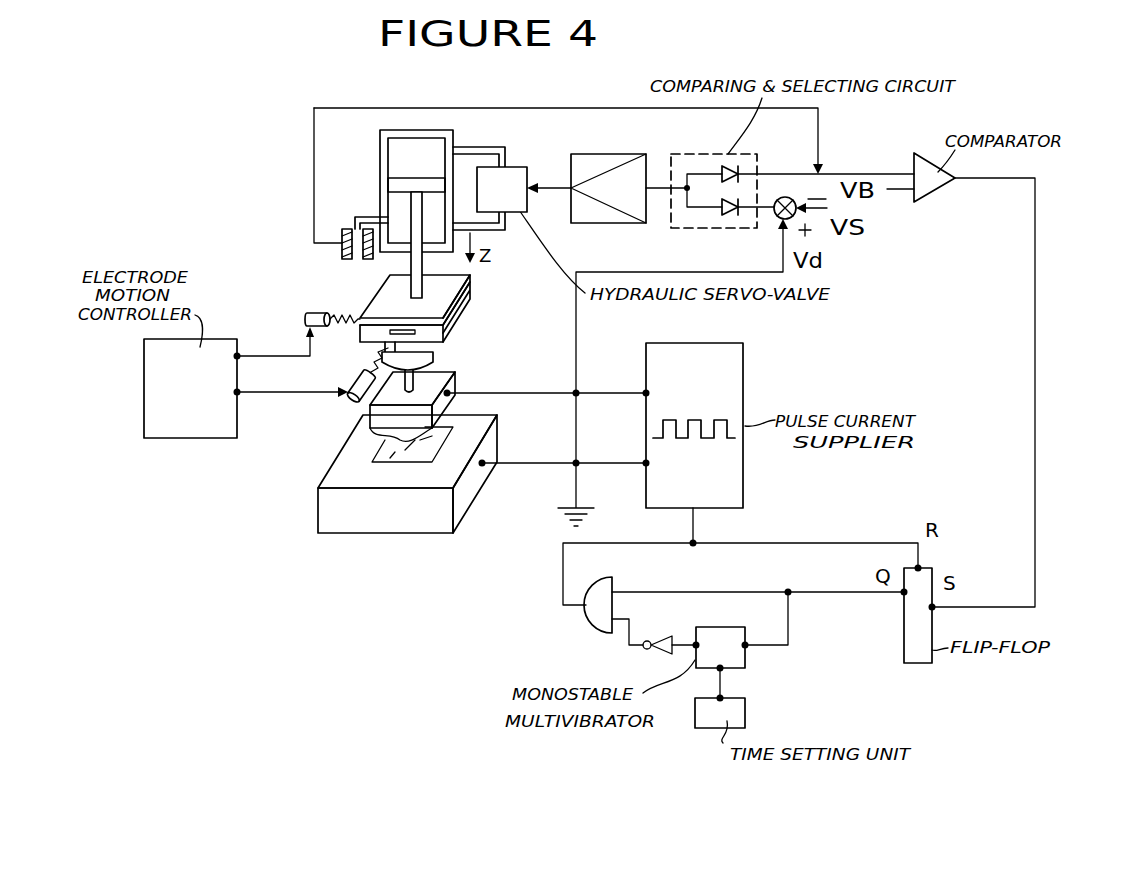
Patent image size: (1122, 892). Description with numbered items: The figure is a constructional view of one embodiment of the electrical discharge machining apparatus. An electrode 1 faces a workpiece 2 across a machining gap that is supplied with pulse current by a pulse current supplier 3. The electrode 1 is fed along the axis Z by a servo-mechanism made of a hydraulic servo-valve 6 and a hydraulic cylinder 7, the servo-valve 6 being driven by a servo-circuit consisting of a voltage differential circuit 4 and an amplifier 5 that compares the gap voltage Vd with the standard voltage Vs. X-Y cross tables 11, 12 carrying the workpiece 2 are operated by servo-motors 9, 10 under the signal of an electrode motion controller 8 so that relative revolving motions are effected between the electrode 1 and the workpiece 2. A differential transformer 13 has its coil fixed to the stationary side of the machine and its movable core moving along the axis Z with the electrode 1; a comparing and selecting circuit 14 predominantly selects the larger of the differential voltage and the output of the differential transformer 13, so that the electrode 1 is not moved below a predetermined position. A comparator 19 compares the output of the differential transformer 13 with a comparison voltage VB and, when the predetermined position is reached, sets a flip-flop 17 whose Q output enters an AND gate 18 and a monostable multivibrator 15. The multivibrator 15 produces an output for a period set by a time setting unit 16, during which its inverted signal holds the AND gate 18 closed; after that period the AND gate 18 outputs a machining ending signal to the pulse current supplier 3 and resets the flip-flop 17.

The electrode 1 is at (450, 384).
The workpiece 2 is at (488, 445).
The pulse current supplier 3 is at (723, 382).
The voltage differential circuit 4 is at (773, 216).
The amplifier 5 is at (580, 157).
The hydraulic servo-valve 6 is at (513, 167).
The hydraulic cylinder 7 is at (422, 150).
The electrode motion controller 8 is at (185, 424).
The servo-motor 9 is at (312, 313).
The servo-motor 10 is at (350, 398).
The X-Y cross table 11 is at (470, 294).
The X-Y cross table 12 is at (462, 318).
The differential transformer 13 is at (346, 229).
The comparing and selecting circuit 14 is at (685, 224).
The monostable multivibrator 15 is at (718, 646).
The time setting unit 16 is at (728, 712).
The flip-flop 17 is at (904, 643).
The AND gate 18 is at (598, 612).
The comparator 19 is at (931, 192).